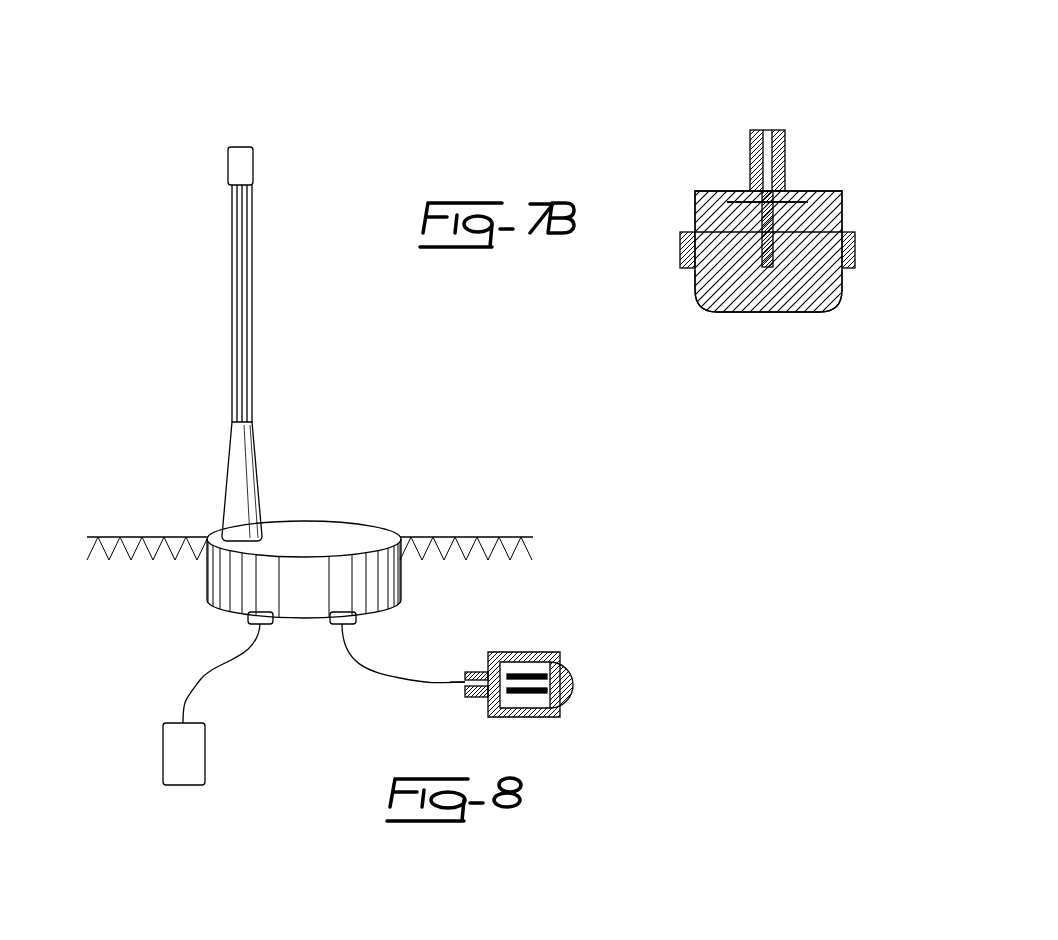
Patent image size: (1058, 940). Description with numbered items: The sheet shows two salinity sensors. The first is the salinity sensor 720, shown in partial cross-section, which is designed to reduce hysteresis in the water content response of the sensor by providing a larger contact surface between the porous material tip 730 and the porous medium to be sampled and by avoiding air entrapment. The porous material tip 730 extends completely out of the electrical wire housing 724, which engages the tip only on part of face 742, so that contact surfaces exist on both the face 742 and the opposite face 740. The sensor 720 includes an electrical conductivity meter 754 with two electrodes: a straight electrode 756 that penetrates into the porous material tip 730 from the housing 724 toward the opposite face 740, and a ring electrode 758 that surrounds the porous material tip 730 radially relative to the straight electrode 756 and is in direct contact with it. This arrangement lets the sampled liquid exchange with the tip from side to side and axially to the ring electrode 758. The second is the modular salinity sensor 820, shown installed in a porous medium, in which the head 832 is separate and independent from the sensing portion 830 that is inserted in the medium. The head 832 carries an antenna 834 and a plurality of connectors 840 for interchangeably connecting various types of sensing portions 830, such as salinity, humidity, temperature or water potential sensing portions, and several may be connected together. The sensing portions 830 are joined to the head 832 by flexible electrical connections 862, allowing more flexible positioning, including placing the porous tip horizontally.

In FIG. 7B, the salinity sensor 720 is at (854, 119).
In FIG. 7B, the electrical wire housing 724 is at (750, 160).
In FIG. 7B, the porous material tip 730 is at (803, 312).
In FIG. 7B, the opposite face 740 is at (727, 311).
In FIG. 7B, the face 742 is at (717, 191).
In FIG. 7B, the electrical conductivity meter 754 is at (672, 250).
In FIG. 7B, the straight electrode 756 is at (697, 213).
In FIG. 7B, the ring electrode 758 is at (855, 253).
In FIG. 8, the salinity sensor 820 is at (512, 501).
In FIG. 8, the sensing portion 830 is at (207, 752).
In FIG. 8, the head 832 is at (322, 520).
In FIG. 8, the antenna 834 is at (230, 443).
In FIG. 8, the connectors 840 is at (247, 618).
In FIG. 8, the flexible electrical connections 862 is at (420, 687).